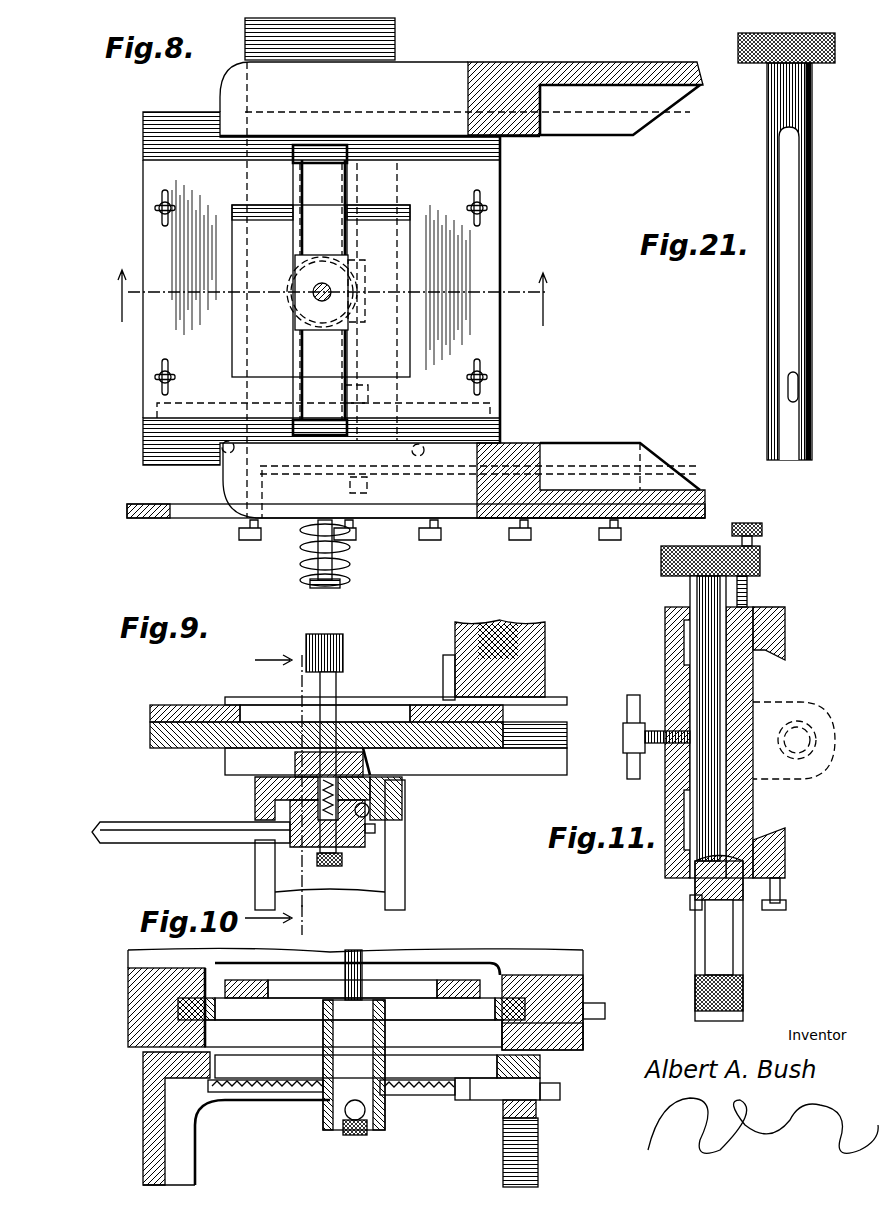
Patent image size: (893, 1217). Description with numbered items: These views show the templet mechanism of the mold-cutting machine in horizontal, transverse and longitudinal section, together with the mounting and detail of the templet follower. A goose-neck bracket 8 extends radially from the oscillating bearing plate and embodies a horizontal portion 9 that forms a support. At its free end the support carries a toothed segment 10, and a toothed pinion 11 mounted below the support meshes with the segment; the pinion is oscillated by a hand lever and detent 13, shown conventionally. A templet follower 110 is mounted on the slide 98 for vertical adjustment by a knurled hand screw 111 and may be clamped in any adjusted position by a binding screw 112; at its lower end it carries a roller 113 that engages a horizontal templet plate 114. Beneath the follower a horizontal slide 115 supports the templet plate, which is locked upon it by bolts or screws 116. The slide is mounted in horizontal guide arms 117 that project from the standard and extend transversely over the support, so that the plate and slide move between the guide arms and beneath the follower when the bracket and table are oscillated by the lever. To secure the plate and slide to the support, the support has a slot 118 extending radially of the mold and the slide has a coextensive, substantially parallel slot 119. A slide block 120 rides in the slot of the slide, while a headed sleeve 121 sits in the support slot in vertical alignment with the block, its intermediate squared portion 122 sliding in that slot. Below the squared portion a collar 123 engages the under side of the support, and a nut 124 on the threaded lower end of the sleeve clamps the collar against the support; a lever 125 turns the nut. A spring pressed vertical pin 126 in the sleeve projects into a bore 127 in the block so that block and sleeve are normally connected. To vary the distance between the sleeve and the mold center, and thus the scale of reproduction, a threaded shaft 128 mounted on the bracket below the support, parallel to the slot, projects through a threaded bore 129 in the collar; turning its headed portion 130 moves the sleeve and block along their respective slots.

In FIG. 8, the goose-neck bracket 8 is at (397, 42).
In FIG. 10, the goose-neck bracket 8 is at (150, 1152).
In FIG. 8, the horizontal portion 9 is at (331, 298).
In FIG. 9, the horizontal portion 9 is at (406, 870).
In FIG. 9, the toothed segment 10 is at (279, 773).
In FIG. 10, the toothed segment 10 is at (540, 1115).
In FIG. 10, the toothed pinion 11 is at (540, 1160).
In FIG. 8, the hand lever and detent 13 is at (352, 553).
In FIG. 9, the hand lever and detent 13 is at (455, 638).
In FIG. 11, the slide 98 is at (668, 660).
In FIG. 8, the templet follower 110 is at (313, 290).
In FIG. 21, the templet follower 110 is at (812, 246).
In FIG. 9, the templet follower 110 is at (328, 634).
In FIG. 11, the templet follower 110 is at (700, 795).
In FIG. 10, the templet follower 110 is at (356, 950).
In FIG. 11, the knurled hand screw 111 is at (765, 529).
In FIG. 11, the binding screw 112 is at (630, 758).
In FIG. 11, the roller 113 is at (745, 995).
In FIG. 8, the templet plate 114 is at (150, 392).
In FIG. 9, the templet plate 114 is at (150, 712).
In FIG. 10, the templet plate 114 is at (455, 980).
In FIG. 8, the slide 115 is at (143, 138).
In FIG. 9, the slide 115 is at (150, 742).
In FIG. 10, the slide 115 is at (475, 1022).
In FIG. 8, the bolts or screws 116 is at (152, 208).
In FIG. 8, the guide arms 117 is at (218, 100).
In FIG. 9, the guide arms 117 is at (548, 765).
In FIG. 10, the guide arms 117 is at (583, 966).
In FIG. 9, the slot 118 is at (405, 785).
In FIG. 10, the slot 118 is at (262, 1094).
In FIG. 8, the slot 119 is at (296, 352).
In FIG. 9, the slot 119 is at (392, 740).
In FIG. 10, the slot 119 is at (255, 1022).
In FIG. 8, the slide block 120 is at (296, 328).
In FIG. 9, the slide block 120 is at (403, 695).
In FIG. 10, the slide block 120 is at (345, 1010).
In FIG. 9, the headed sleeve 121 is at (372, 760).
In FIG. 10, the headed sleeve 121 is at (330, 1055).
In FIG. 9, the squared portion 122 is at (255, 782).
In FIG. 9, the collar 123 is at (290, 805).
In FIG. 10, the collar 123 is at (497, 1062).
In FIG. 9, the nut 124 is at (345, 866).
In FIG. 9, the lever 125 is at (205, 845).
In FIG. 10, the lever 125 is at (347, 1130).
In FIG. 9, the spring pressed vertical pin 126 is at (295, 758).
In FIG. 9, the bore 127 is at (272, 720).
In FIG. 8, the threaded shaft 128 is at (366, 494).
In FIG. 9, the threaded shaft 128 is at (405, 812).
In FIG. 10, the threaded shaft 128 is at (425, 1096).
In FIG. 9, the threaded bore 129 is at (369, 812).
In FIG. 10, the headed portion 130 is at (560, 1090).